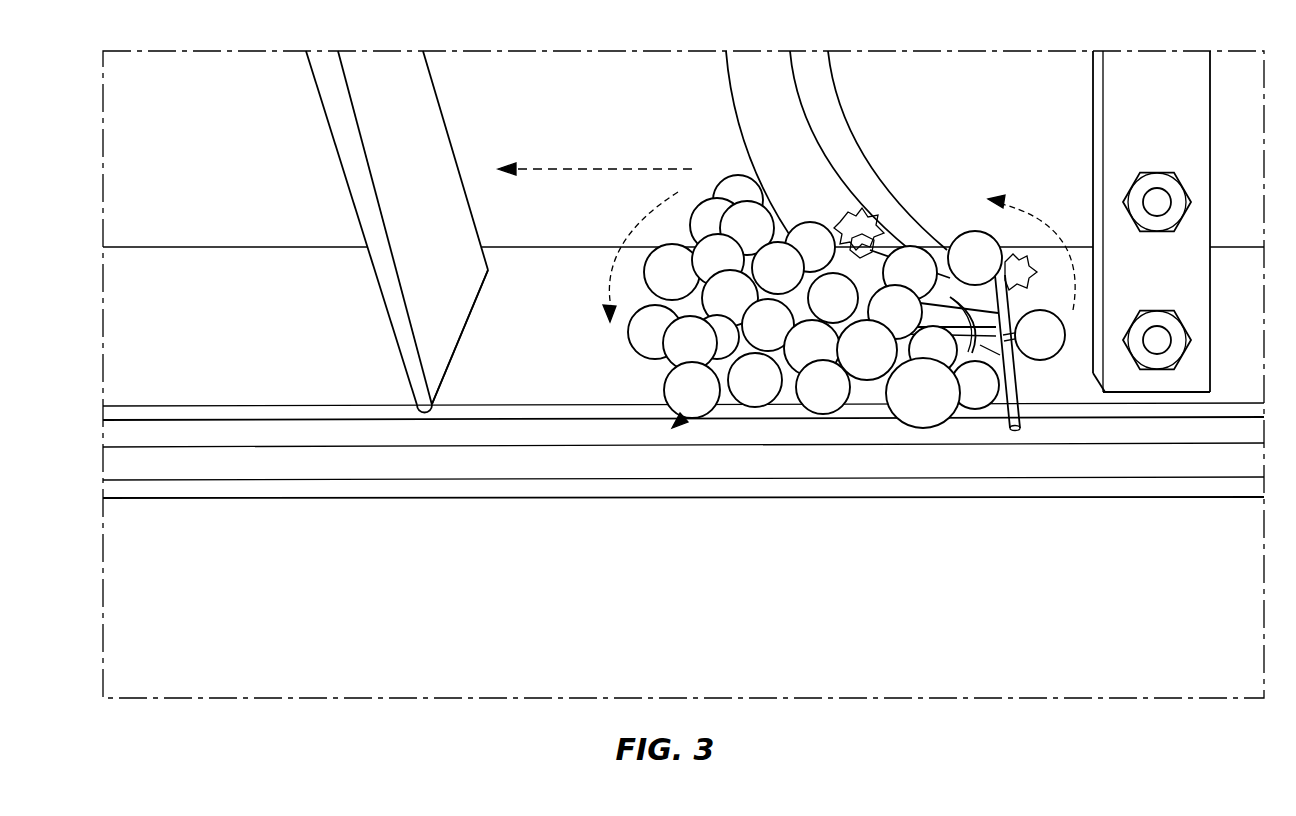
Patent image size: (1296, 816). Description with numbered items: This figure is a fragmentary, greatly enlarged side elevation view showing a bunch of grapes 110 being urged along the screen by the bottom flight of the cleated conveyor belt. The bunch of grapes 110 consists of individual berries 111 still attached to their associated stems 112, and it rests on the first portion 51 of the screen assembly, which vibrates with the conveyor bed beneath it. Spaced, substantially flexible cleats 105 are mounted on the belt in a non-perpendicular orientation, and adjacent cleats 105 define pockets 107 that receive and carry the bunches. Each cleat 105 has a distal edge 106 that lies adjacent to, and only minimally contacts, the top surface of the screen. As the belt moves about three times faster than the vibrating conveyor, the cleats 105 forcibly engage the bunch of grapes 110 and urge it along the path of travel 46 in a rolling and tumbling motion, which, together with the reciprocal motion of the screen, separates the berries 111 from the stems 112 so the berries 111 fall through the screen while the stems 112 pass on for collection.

The path of travel 46 is at (593, 165).
The first portion of the screen assembly 51 is at (233, 332).
The flexible cleats 105 is at (422, 156).
The distal edge 106 is at (448, 305).
The pockets 107 is at (647, 63).
The bunches of grapes 110 is at (680, 415).
The berries 111 is at (688, 403).
The stems 112 is at (977, 343).